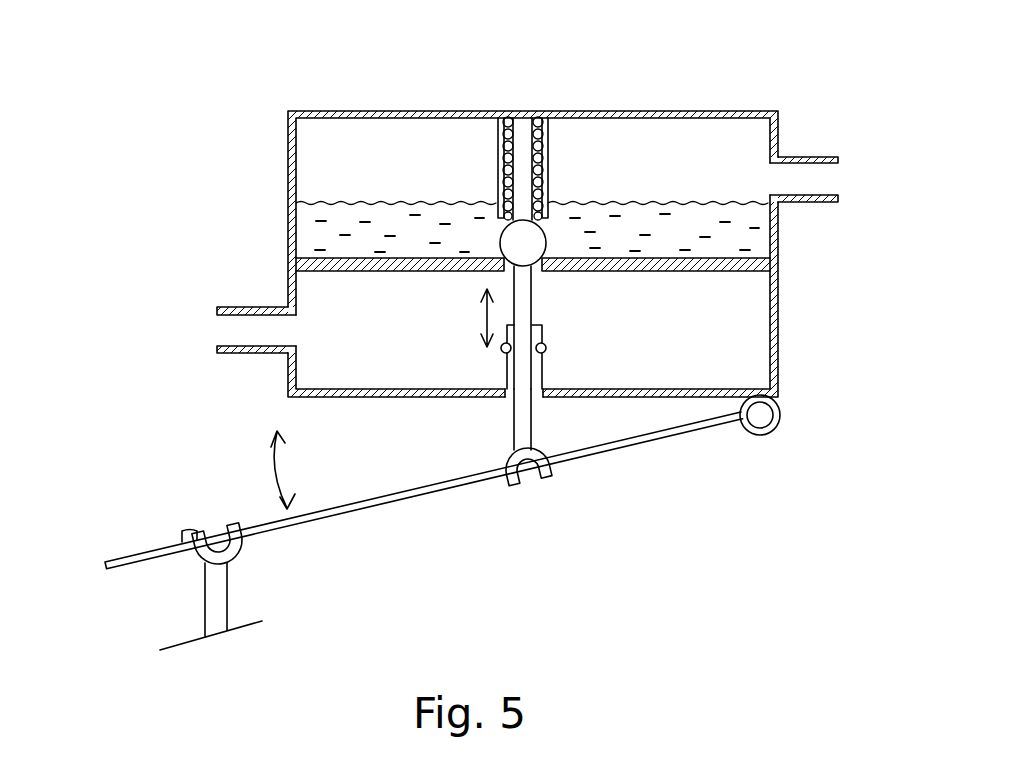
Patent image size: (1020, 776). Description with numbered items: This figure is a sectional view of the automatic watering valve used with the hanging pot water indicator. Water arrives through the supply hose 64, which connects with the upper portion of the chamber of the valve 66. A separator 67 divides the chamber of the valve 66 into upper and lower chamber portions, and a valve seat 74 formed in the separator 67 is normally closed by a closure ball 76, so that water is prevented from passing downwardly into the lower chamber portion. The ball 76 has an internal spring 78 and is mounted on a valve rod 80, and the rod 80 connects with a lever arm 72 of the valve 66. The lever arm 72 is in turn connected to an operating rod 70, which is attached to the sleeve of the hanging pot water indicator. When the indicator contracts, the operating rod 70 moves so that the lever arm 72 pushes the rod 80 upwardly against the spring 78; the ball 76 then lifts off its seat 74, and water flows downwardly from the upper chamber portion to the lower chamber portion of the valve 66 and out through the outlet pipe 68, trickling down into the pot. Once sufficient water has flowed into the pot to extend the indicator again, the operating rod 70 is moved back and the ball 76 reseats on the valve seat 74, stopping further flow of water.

The supply hose 64 is at (813, 158).
The valve 66 is at (220, 222).
The separator 67 is at (688, 267).
The outlet pipe 68 is at (217, 329).
The operating rod 70 is at (205, 607).
The lever arm 72 is at (152, 550).
The valve seat 74 is at (493, 272).
The closure ball 76 is at (527, 242).
The internal spring 78 is at (498, 169).
The valve rod 80 is at (523, 427).